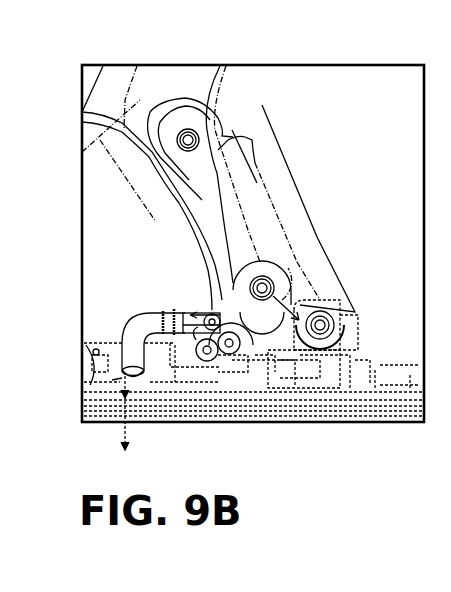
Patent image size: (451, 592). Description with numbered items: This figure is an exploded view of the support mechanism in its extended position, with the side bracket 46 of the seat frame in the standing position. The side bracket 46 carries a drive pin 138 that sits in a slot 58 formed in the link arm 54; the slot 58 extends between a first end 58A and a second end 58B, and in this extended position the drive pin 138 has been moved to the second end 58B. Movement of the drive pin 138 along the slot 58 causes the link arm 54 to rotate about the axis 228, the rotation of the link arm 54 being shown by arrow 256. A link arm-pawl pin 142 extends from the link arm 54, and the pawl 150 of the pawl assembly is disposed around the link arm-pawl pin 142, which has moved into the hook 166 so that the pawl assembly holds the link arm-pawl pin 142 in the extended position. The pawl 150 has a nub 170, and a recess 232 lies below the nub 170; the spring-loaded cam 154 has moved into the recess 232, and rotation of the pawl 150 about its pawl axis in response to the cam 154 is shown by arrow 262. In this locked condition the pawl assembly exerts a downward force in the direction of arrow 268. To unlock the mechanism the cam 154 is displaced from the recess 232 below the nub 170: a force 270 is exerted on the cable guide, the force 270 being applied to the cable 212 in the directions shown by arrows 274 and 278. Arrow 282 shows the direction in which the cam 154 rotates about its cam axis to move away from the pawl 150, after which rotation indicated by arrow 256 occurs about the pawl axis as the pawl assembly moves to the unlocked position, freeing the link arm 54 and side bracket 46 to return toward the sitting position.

The side bracket 46 is at (120, 80).
The second end of the slot 58B is at (184, 133).
The drive pin 138 is at (190, 138).
The slot 58 is at (218, 190).
The pawl 150 is at (226, 232).
The hook 166 is at (245, 258).
The link arm 54 is at (278, 232).
The link arm-pawl pin 142 is at (270, 280).
The end of the slot 58A is at (268, 283).
The recess 232 is at (226, 298).
The nub 170 is at (220, 298).
The cable 212 is at (185, 312).
The arrow 278 is at (195, 298).
The spring-loaded cam 154 is at (155, 338).
The arrow 274 is at (123, 375).
The force 270 is at (129, 430).
The arrow 282 is at (196, 342).
The arrow 262 is at (243, 355).
The arrow 268 is at (278, 330).
The axis 228 is at (300, 330).
The arrow 256 is at (322, 326).